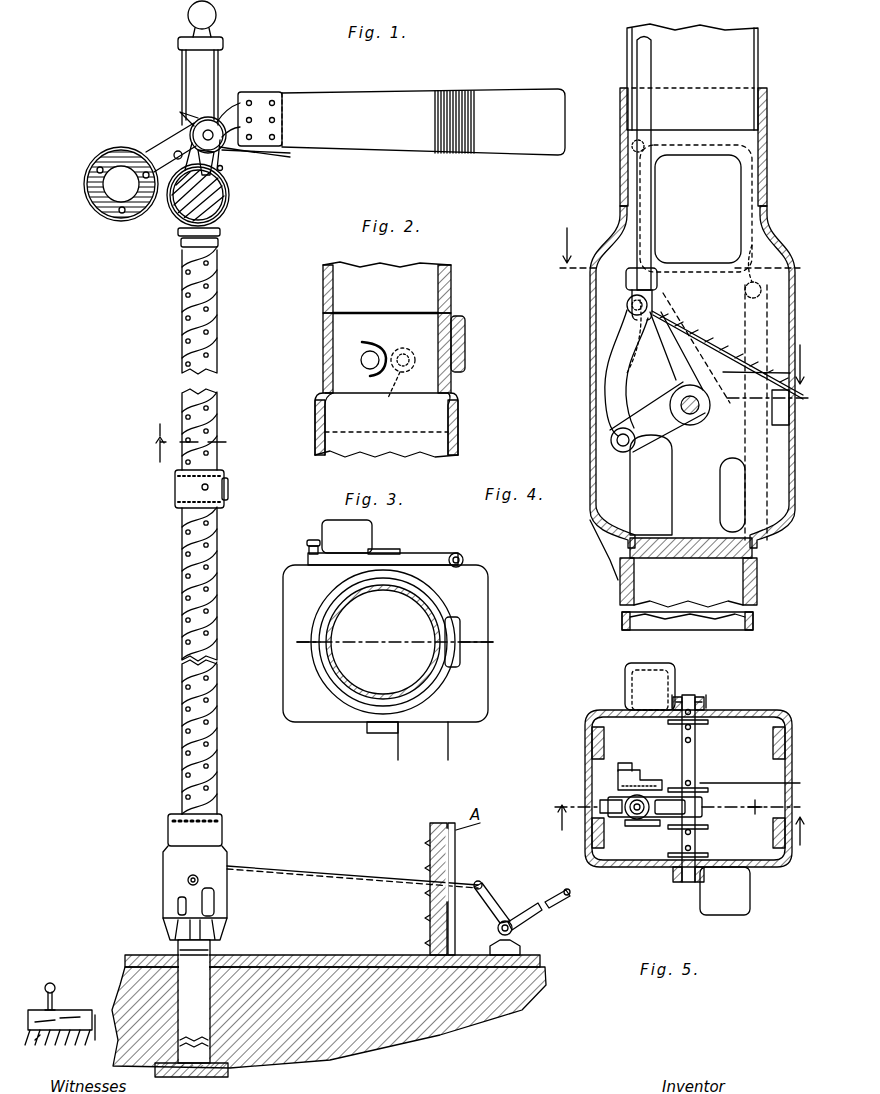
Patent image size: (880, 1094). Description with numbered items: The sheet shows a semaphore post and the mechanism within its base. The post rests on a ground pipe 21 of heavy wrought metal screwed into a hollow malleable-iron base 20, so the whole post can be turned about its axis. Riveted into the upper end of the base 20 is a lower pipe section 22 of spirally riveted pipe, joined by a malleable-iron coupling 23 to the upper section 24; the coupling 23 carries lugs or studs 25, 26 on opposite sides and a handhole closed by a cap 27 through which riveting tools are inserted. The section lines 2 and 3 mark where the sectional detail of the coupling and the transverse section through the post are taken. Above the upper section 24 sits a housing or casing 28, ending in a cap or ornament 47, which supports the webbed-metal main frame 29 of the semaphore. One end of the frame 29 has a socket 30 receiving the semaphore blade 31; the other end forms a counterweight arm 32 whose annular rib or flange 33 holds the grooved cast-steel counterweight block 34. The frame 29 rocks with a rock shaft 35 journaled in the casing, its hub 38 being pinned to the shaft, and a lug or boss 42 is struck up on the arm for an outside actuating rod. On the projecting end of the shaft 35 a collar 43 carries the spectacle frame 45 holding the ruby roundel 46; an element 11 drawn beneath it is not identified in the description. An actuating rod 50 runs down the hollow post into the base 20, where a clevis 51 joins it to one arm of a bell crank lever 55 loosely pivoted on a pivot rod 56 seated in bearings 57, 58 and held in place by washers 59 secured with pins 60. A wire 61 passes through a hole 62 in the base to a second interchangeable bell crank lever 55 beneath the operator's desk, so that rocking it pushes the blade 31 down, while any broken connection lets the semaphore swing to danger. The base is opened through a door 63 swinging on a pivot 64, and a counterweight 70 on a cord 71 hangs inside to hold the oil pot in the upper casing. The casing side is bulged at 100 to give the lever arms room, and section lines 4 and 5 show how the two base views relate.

In FIG. 1, the collar 11 is at (180, 246).
In FIG. 1, the base 20 is at (226, 838).
In FIG. 4, the base 20 is at (768, 205).
In FIG. 1, the ground pipe 21 is at (196, 972).
In FIG. 4, the ground pipe 21 is at (754, 622).
In FIG. 1, the pipe section 22 is at (218, 732).
In FIG. 2, the pipe section 22 is at (462, 446).
In FIG. 4, the pipe section 22 is at (758, 60).
In FIG. 1, the coupling 23 is at (175, 495).
In FIG. 2, the coupling 23 is at (460, 405).
In FIG. 3, the coupling 23 is at (440, 684).
In FIG. 1, the upper section 24 is at (218, 416).
In FIG. 2, the upper section 24 is at (448, 272).
In FIG. 3, the upper section 24 is at (412, 600).
In FIG. 1, the lug or stud 25 is at (208, 485).
In FIG. 2, the lug or stud 25 is at (400, 382).
In FIG. 2, the lug or stud 26 is at (376, 352).
In FIG. 1, the cap 27 is at (229, 489).
In FIG. 2, the cap 27 is at (466, 355).
In FIG. 3, the cap 27 is at (461, 644).
In FIG. 1, the housing or casing 28 is at (222, 162).
In FIG. 1, the main frame 29 is at (190, 128).
In FIG. 1, the socket 30 is at (262, 96).
In FIG. 1, the semaphore blade 31 is at (370, 100).
In FIG. 1, the counterweight arm 32 is at (120, 150).
In FIG. 1, the annular rib or flange 33 is at (88, 184).
In FIG. 1, the counterweight block 34 is at (110, 210).
In FIG. 1, the rock shaft 35 is at (214, 120).
In FIG. 1, the hub 38 is at (196, 122).
In FIG. 1, the lug or boss 42 is at (175, 155).
In FIG. 1, the collar 43 is at (262, 155).
In FIG. 1, the spectacle frame 45 is at (228, 200).
In FIG. 1, the ruby roundel 46 is at (215, 212).
In FIG. 1, the cap or ornament 47 is at (192, 53).
In FIG. 4, the actuating rod 50 is at (652, 80).
In FIG. 4, the clevis 51 is at (605, 362).
In FIG. 1, the bell crank lever 55 is at (540, 910).
In FIG. 4, the bell crank lever 55 is at (672, 425).
In FIG. 4, the pivot rod 56 is at (700, 406).
In FIG. 5, the pivot rod 56 is at (698, 760).
In FIG. 3, the bearing 57 is at (400, 553).
In FIG. 5, the bearing 57 is at (692, 696).
In FIG. 3, the bearing 58 is at (380, 733).
In FIG. 5, the bearing 58 is at (694, 880).
In FIG. 5, the washers 59 is at (670, 725).
In FIG. 5, the pins 60 is at (620, 838).
In FIG. 1, the wire 61 is at (347, 874).
In FIG. 4, the wire 61 is at (716, 340).
In FIG. 5, the wire 61 is at (750, 775).
In FIG. 4, the hole 62 is at (753, 382).
In FIG. 3, the door 63 is at (440, 553).
In FIG. 4, the door 63 is at (696, 208).
In FIG. 3, the pivot 64 is at (307, 550).
In FIG. 4, the pivot 64 is at (648, 150).
In FIG. 4, the counterweight 70 is at (740, 470).
In FIG. 5, the counterweight 70 is at (746, 813).
In FIG. 4, the cord or wire 71 is at (753, 282).
In FIG. 3, the bulge 100 is at (370, 540).
In FIG. 5, the bulge 100 is at (626, 678).
In FIG. 3, the section line 2 is at (390, 652).
In FIG. 1, the section line 3 is at (189, 443).
In FIG. 5, the section line 4 is at (679, 809).
In FIG. 4, the section line 5 is at (676, 322).